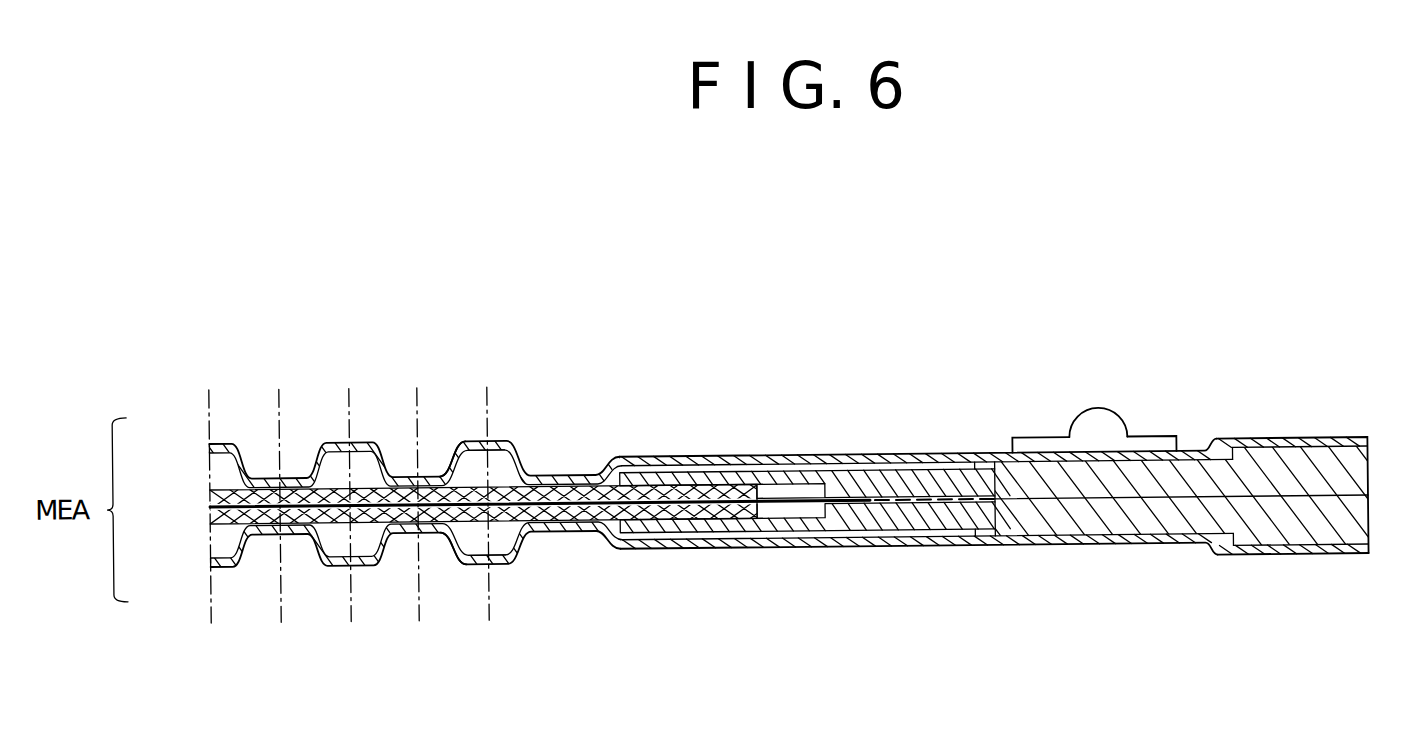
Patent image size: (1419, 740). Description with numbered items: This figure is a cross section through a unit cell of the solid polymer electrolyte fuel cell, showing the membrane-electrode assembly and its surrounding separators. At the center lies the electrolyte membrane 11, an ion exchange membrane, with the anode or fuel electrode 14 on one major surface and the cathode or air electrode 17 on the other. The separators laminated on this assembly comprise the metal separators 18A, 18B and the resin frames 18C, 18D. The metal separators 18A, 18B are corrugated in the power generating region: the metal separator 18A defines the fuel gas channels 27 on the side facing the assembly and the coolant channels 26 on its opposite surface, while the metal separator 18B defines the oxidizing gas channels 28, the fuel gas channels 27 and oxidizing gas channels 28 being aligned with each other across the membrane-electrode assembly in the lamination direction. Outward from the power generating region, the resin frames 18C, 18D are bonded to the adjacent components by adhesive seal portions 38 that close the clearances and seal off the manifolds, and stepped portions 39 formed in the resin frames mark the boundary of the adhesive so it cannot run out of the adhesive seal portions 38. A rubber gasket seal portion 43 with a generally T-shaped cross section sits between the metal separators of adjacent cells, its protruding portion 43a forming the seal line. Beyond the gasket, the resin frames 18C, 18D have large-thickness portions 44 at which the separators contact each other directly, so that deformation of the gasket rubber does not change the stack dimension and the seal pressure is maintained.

The electrolyte membrane 11 is at (210, 492).
The electrode 14 is at (212, 531).
The electrode 17 is at (213, 456).
The coolant channels 26 is at (435, 464).
The fuel gas channels 27 is at (500, 535).
The oxidizing gas channels 28 is at (503, 467).
The metal separator 18A is at (648, 450).
The metal separator 18B is at (640, 548).
The resin frame 18C is at (1348, 479).
The resin frame 18D is at (1340, 539).
The adhesive seal portions 38 is at (847, 468).
The stepped portions 39 is at (964, 457).
The seal portions 43 is at (1037, 440).
The protruding portion 43a is at (1102, 425).
The large-thickness portions 44 is at (1270, 462).